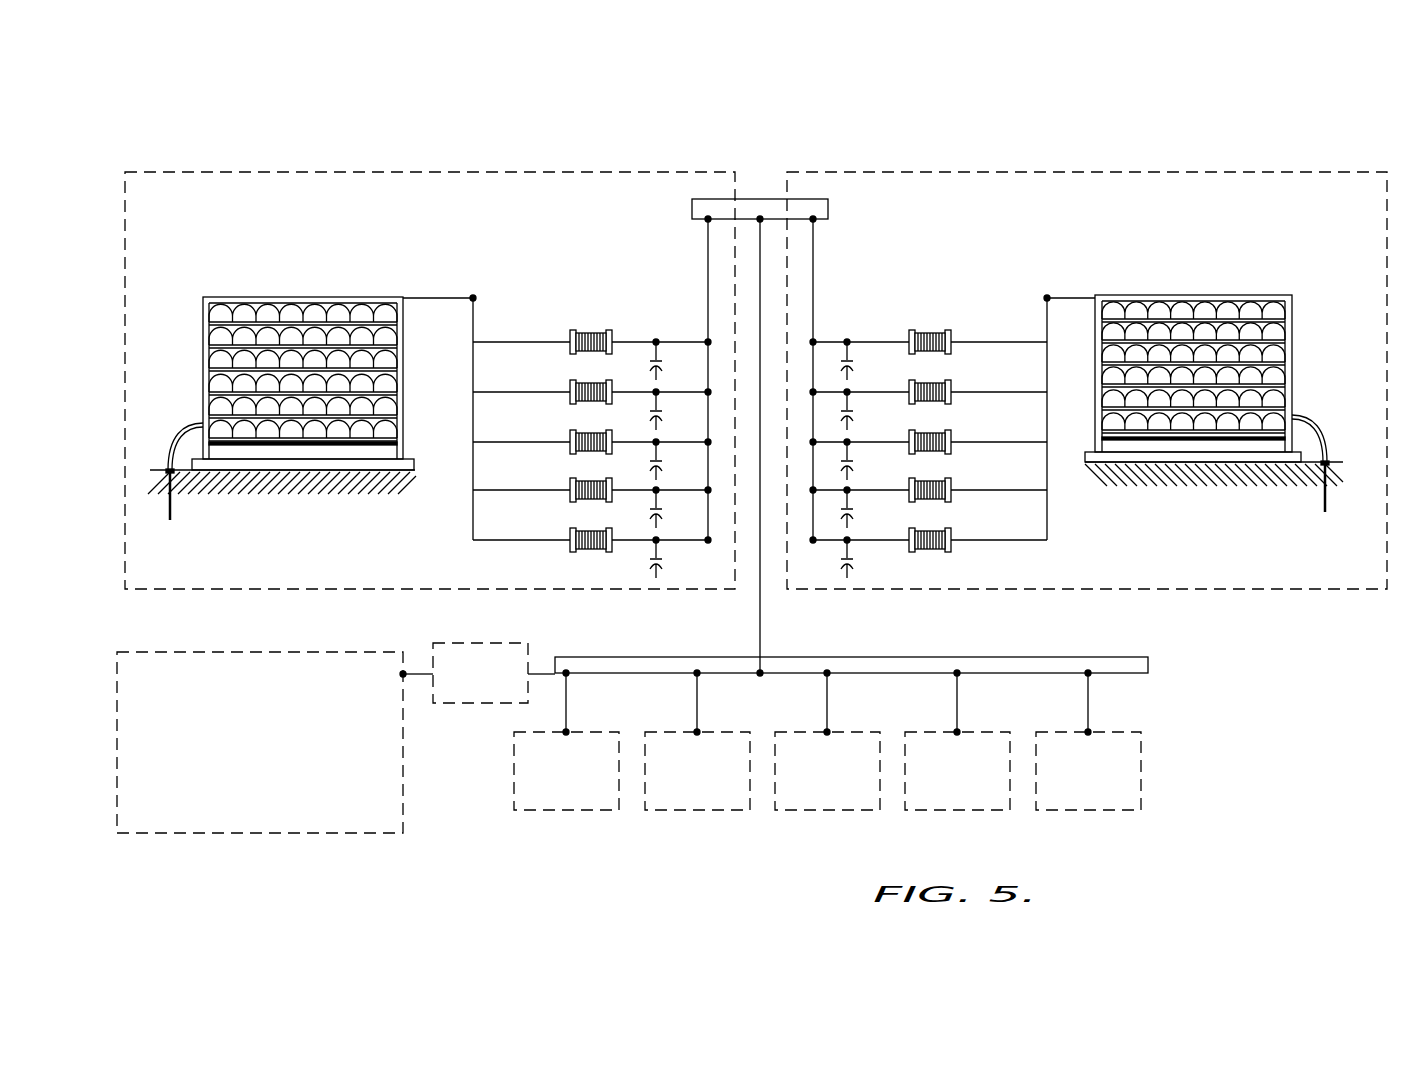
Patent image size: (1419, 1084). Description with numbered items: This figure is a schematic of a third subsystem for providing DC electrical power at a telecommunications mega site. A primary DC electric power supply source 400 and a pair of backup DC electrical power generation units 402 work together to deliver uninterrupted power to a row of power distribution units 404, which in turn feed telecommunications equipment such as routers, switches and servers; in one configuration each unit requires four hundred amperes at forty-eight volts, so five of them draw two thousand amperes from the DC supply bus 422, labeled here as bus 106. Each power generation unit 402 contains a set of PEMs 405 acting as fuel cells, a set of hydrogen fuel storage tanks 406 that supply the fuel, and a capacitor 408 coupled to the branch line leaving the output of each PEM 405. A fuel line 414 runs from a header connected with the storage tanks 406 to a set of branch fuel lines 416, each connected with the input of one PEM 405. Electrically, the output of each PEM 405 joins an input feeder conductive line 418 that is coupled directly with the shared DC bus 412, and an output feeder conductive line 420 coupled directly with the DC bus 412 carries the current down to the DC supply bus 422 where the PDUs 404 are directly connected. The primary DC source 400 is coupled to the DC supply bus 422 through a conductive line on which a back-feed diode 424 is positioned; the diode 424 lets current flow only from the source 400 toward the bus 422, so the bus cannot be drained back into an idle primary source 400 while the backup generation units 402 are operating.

The DC bus 106 is at (886, 652).
The primary DC electric power supply source 400 is at (262, 833).
The backup DC electrical power generation unit 402 is at (360, 172).
The power distribution unit 404 is at (603, 810).
The PEM 405 is at (607, 380).
The hydrogen fuel storage tank 406 is at (361, 303).
The capacitor 408 is at (657, 412).
The DC bus 412 is at (798, 220).
The fuel line 414 is at (473, 312).
The branch fuel line 416 is at (537, 392).
The input feeder conductive line 418 is at (708, 243).
The output feeder conductive line 420 is at (885, 542).
The DC supply bus 422 is at (1148, 662).
The back-feed diode 424 is at (488, 703).